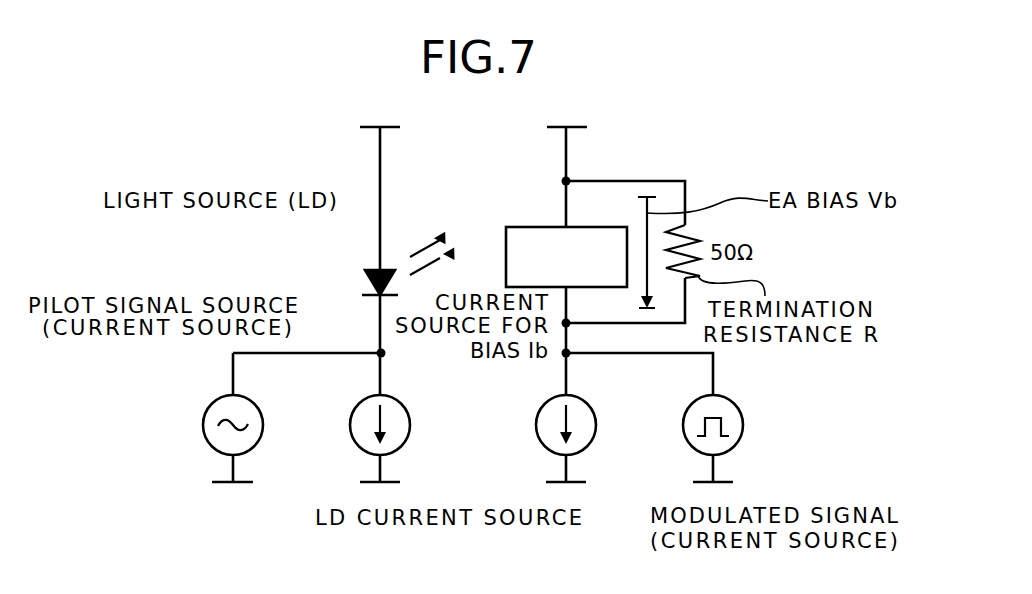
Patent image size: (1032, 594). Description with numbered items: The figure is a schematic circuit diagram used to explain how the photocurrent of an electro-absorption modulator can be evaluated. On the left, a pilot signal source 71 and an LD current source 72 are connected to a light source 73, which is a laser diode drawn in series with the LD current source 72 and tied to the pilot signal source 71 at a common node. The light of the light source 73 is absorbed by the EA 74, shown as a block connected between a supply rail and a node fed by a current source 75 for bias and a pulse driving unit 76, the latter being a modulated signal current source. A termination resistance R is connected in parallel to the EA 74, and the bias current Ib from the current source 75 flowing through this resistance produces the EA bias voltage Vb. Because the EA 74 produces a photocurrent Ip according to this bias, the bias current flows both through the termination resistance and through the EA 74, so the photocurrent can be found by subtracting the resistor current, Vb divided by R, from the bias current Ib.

The pilot signal source 71 is at (212, 400).
The LD current source 72 is at (398, 449).
The light source 73 is at (375, 268).
The EA 74 is at (531, 227).
The current source for bias 75 is at (549, 400).
The pulse driving unit 76 is at (733, 450).